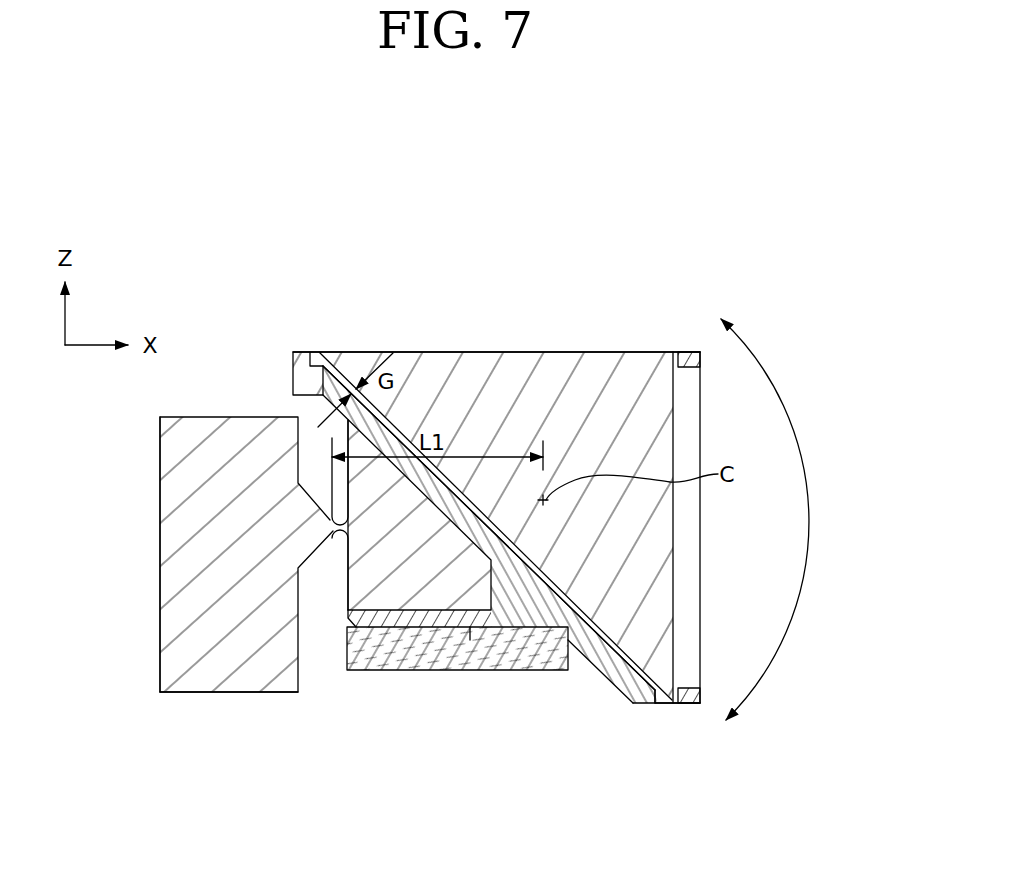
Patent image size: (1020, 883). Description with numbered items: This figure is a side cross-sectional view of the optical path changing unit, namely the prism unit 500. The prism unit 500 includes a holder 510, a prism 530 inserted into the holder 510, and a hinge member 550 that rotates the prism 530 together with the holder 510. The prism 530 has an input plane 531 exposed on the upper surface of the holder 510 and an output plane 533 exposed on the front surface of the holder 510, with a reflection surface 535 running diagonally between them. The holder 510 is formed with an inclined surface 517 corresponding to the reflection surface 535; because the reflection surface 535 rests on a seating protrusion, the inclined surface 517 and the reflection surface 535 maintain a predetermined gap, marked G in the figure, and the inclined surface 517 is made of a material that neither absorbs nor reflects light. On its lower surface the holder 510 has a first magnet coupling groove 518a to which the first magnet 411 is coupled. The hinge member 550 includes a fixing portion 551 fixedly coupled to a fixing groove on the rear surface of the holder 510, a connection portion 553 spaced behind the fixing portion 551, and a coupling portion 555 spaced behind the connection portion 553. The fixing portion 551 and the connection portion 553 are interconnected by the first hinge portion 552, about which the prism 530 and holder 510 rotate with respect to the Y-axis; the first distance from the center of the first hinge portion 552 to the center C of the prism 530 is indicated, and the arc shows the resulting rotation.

The prism unit 500 is at (439, 130).
The holder 510 is at (659, 711).
The inclined surface 517 is at (492, 532).
The first magnet coupling groove 518a is at (472, 641).
The prism 530 is at (654, 349).
The input plane 531 is at (558, 351).
The output plane 533 is at (684, 540).
The reflection surface 535 is at (568, 641).
The hinge member 550 is at (146, 465).
The fixing portion 551 is at (436, 589).
The first hinge portion 552 is at (334, 539).
The connection portion 553 is at (288, 693).
The coupling portion 555 is at (160, 656).
The first magnet 411 is at (393, 673).